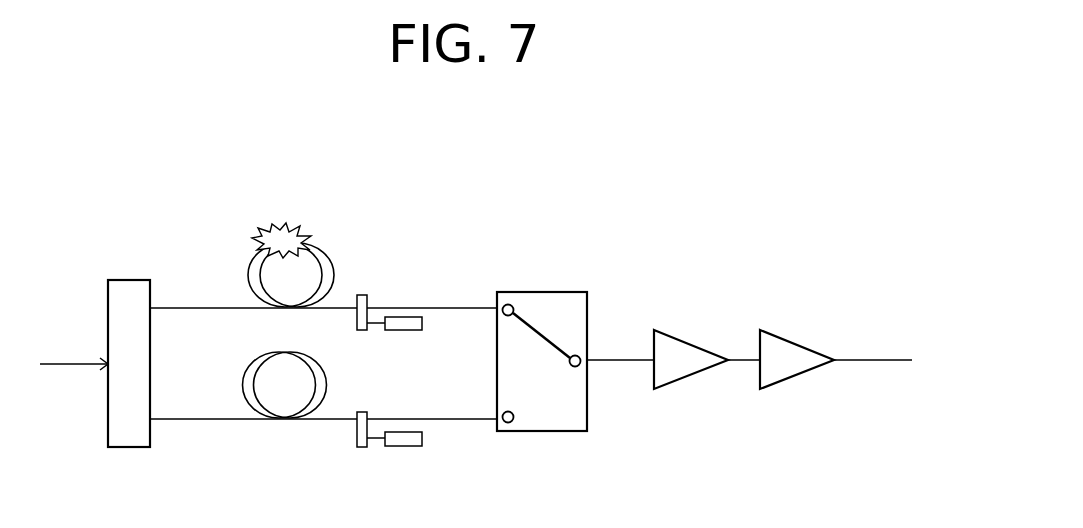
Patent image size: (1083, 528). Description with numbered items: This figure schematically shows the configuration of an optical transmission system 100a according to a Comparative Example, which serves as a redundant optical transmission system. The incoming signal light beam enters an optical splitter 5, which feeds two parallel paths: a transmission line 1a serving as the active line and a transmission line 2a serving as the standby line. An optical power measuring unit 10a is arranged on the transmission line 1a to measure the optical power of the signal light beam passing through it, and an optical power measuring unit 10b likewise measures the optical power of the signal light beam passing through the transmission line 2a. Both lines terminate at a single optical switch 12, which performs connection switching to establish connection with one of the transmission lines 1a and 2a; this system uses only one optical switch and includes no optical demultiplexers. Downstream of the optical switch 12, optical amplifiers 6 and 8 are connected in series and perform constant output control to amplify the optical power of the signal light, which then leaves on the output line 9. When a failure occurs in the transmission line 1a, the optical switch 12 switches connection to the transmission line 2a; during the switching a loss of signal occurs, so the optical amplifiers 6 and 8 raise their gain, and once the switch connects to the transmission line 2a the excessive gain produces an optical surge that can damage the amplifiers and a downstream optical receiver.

The optical transmission system 100a is at (249, 136).
The transmission line 1a is at (186, 307).
The transmission line 2a is at (186, 418).
The optical splitter 5 is at (127, 449).
The optical power measuring unit 10a is at (391, 331).
The optical power measuring unit 10b is at (391, 447).
The optical switch 12 is at (542, 292).
The optical amplifier 6 is at (691, 376).
The optical amplifier 8 is at (801, 376).
The output optical transmission path 9 is at (868, 358).